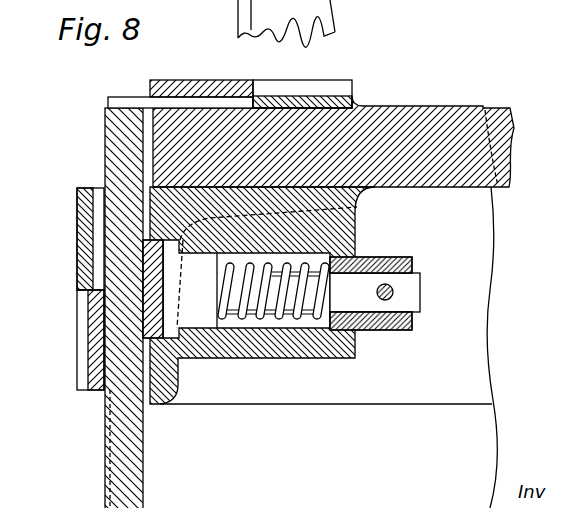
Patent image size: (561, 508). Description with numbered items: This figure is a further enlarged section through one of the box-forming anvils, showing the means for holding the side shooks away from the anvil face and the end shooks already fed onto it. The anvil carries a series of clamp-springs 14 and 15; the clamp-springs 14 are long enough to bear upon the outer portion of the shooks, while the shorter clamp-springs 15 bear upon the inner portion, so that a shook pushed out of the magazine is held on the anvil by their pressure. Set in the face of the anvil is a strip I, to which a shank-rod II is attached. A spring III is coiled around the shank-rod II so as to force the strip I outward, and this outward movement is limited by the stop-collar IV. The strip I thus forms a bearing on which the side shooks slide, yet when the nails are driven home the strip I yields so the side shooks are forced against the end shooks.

The clamp-springs 14 is at (197, 80).
The clamp-springs 15 is at (325, 103).
The strips I is at (150, 330).
The shank-rods II is at (366, 305).
The springs III is at (332, 262).
The stop-collar IV is at (413, 328).